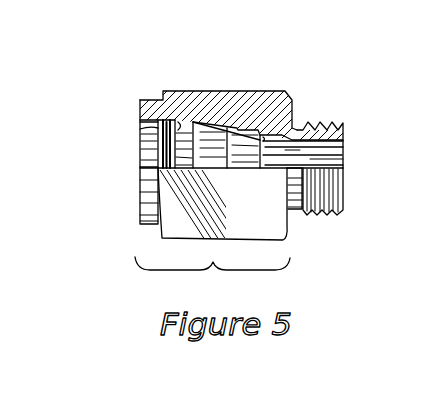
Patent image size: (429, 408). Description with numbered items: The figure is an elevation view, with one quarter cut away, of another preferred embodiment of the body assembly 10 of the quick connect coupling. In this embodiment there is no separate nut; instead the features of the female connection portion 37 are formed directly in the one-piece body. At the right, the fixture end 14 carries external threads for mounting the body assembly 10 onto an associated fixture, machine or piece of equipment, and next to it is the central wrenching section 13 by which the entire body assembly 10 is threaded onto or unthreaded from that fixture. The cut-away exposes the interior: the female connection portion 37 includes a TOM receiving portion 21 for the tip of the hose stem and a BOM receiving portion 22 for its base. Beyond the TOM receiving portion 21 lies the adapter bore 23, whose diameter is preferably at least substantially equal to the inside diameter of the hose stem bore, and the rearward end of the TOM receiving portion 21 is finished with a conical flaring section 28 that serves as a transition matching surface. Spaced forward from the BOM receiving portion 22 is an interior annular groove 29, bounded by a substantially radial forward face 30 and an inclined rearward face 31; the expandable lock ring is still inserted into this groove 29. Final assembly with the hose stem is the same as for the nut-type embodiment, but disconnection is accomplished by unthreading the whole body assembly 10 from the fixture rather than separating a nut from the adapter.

The body assembly 10 is at (82, 126).
The central wrenching section 13 is at (265, 246).
The fixture end 14 is at (320, 118).
The TOM receiving portion 21 is at (275, 110).
The BOM receiving portion 22 is at (140, 128).
The adapter bore 23 is at (343, 152).
The conical flaring section 28 is at (160, 156).
The interior annular groove 29 is at (168, 123).
The radial forward face 30 is at (215, 95).
The inclined rearward face 31 is at (157, 120).
The female connection portion 37 is at (212, 276).